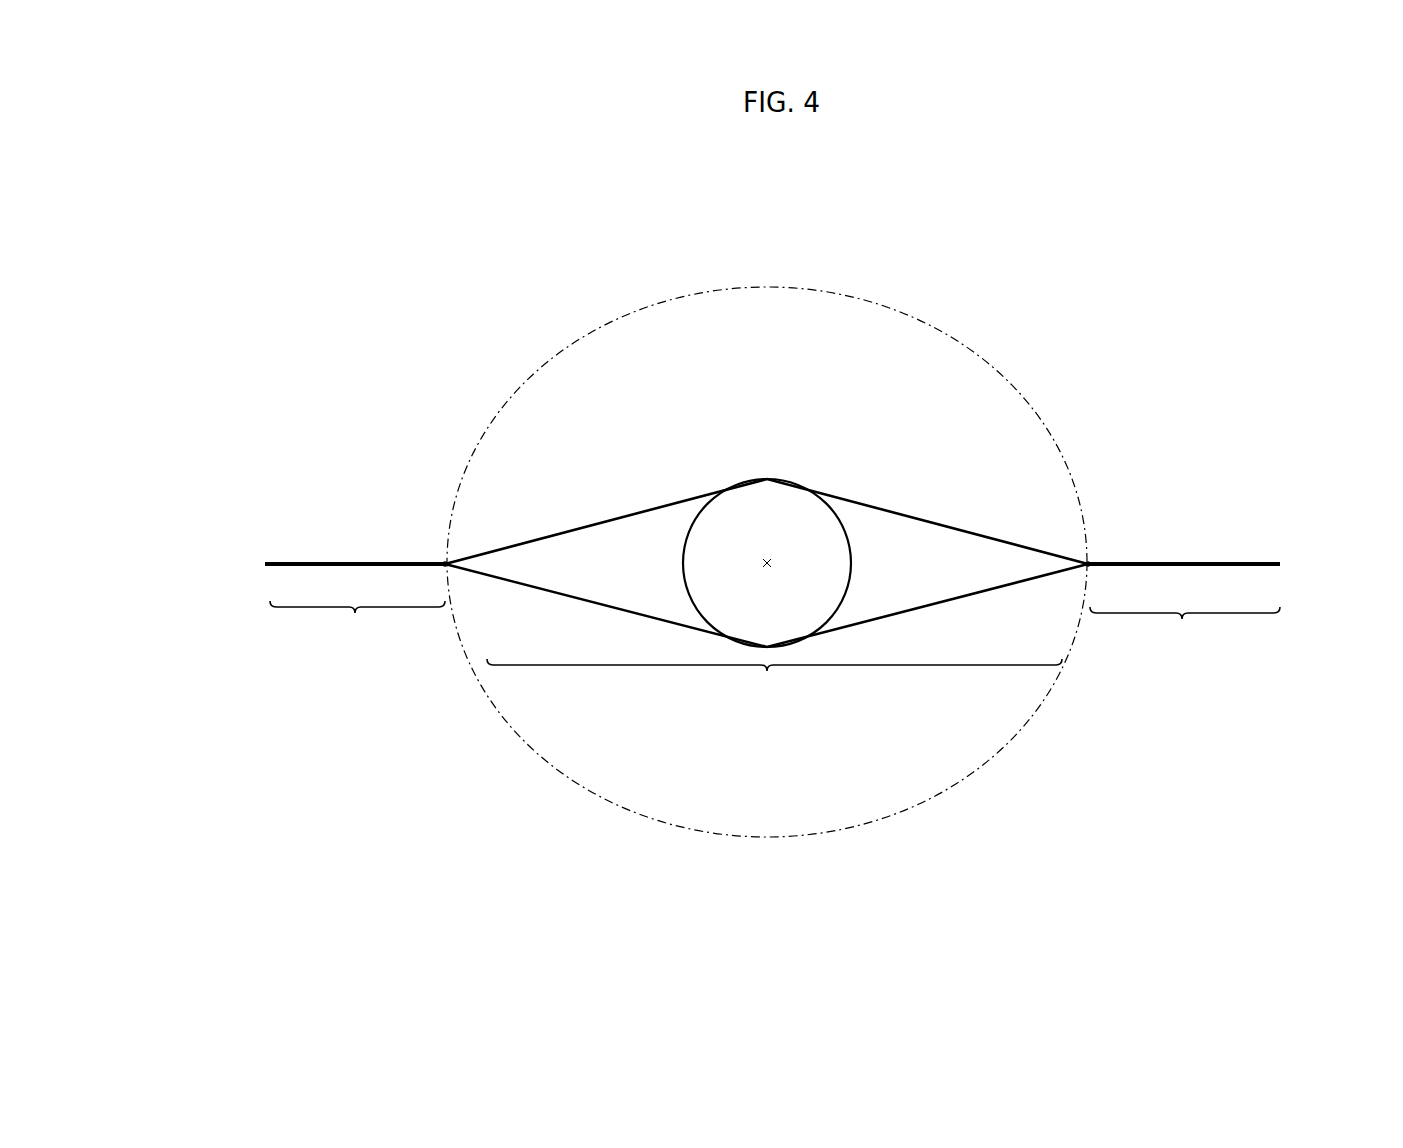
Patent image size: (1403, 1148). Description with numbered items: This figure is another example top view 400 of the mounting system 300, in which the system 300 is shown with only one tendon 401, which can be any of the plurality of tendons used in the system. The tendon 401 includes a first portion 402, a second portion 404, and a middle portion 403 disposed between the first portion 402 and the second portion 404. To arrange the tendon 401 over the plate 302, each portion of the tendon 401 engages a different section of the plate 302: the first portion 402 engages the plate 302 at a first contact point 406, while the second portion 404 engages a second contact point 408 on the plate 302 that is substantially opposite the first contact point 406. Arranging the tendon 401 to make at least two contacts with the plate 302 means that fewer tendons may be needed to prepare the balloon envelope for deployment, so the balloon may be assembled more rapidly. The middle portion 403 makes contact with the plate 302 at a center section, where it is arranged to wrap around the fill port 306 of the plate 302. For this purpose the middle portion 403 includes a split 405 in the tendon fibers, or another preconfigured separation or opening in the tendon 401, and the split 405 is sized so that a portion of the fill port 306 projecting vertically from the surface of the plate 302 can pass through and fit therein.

The top view 400 is at (1312, 111).
The mounting system 300 is at (1221, 232).
The plate 302 is at (867, 297).
The fill port 306 is at (770, 518).
The tendon 401 is at (1280, 562).
The first portion 402 is at (355, 613).
The middle portion 403 is at (767, 671).
The second portion 404 is at (1182, 619).
The split 405 is at (922, 578).
The first contact point 406 is at (445, 562).
The second contact point 408 is at (1095, 560).